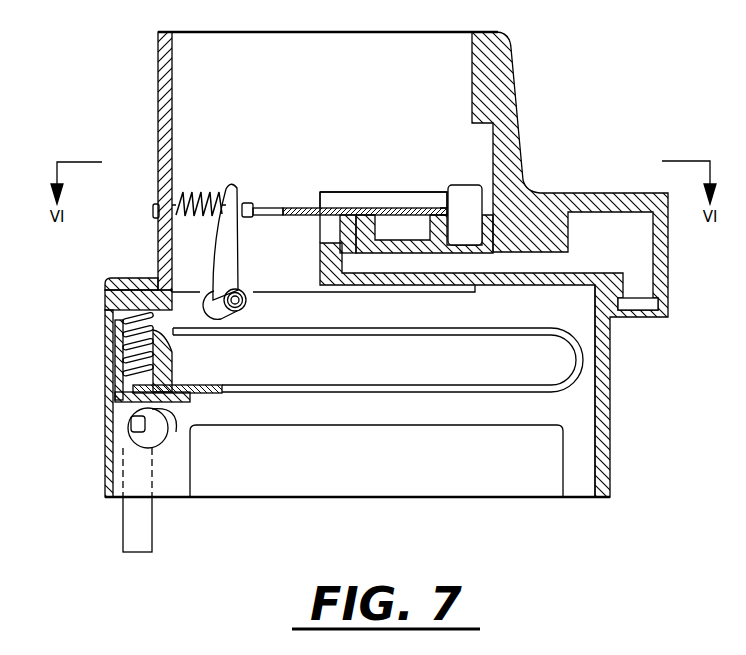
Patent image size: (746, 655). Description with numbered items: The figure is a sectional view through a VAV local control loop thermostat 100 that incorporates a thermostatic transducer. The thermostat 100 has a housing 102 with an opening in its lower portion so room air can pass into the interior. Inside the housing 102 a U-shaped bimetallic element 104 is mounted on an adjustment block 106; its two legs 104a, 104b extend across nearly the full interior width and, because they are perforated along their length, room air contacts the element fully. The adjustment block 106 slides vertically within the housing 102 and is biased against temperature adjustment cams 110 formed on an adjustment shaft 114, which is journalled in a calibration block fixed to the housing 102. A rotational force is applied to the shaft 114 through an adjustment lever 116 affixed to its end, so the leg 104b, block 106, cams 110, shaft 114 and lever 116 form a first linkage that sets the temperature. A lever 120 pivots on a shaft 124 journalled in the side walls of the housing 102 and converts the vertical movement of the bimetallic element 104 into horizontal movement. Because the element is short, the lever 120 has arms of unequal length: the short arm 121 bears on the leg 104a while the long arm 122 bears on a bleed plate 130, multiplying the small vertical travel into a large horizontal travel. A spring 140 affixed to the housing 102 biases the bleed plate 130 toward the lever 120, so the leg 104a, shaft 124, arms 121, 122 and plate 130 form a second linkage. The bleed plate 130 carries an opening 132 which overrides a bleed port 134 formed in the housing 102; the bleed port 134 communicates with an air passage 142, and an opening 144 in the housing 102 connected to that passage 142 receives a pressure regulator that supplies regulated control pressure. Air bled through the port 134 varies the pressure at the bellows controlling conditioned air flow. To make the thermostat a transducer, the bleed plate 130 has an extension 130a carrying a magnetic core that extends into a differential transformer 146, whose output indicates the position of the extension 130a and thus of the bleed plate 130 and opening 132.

The thermostat 100 is at (572, 100).
The housing 102 is at (158, 75).
The bimetallic element 104 is at (378, 399).
The leg of bimetallic element 104a is at (393, 327).
The leg of bimetallic element 104b is at (393, 382).
The adjustment block 106 is at (175, 340).
The temperature adjustment cams 110 is at (140, 448).
The adjustment shaft 114 is at (133, 426).
The adjustment lever 116 is at (120, 537).
The lever 120 is at (222, 278).
The short arm 121 is at (205, 305).
The long arm 122 is at (217, 240).
The shaft 124 is at (248, 303).
The bleed plate 130 is at (262, 200).
The extension 130a is at (443, 205).
The opening 132 is at (353, 212).
The bleed port 134 is at (358, 245).
The spring 140 is at (195, 195).
The air passage 142 is at (606, 242).
The opening 144 is at (642, 304).
The differential transformer 146 is at (458, 182).